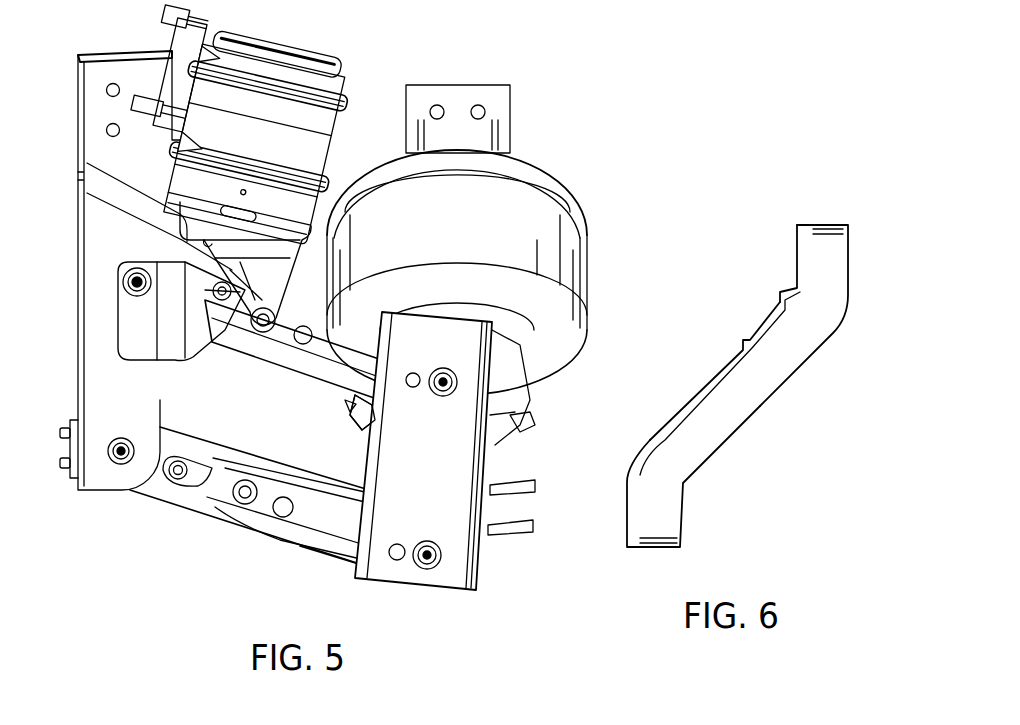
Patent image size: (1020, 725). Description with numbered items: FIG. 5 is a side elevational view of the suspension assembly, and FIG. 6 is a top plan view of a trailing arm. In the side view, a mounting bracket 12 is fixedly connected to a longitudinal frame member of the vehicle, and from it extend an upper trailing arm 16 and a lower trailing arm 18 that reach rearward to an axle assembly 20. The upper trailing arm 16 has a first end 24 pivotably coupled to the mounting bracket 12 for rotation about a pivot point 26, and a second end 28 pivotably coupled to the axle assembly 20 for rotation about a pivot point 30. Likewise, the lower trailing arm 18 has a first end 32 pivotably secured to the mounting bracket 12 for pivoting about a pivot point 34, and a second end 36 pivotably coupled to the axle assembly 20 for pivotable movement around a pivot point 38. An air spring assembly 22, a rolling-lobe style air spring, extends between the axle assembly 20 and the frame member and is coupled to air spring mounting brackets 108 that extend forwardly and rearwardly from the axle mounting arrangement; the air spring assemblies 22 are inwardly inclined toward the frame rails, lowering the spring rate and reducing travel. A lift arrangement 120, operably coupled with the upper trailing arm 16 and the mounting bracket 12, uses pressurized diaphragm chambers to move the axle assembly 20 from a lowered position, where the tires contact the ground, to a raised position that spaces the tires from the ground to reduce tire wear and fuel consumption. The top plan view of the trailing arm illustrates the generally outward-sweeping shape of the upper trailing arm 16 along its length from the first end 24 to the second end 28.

In FIG. 5, the mounting bracket 12 is at (126, 52).
In FIG. 5, the upper trailing arm 16 is at (293, 367).
In FIG. 6, the upper trailing arm 16 is at (753, 386).
In FIG. 5, the lower trailing arm 18 is at (230, 515).
In FIG. 5, the axle assembly 20 is at (491, 468).
In FIG. 5, the air spring assembly 22 is at (596, 248).
In FIG. 5, the first end 24 is at (226, 347).
In FIG. 6, the first end 24 is at (834, 328).
In FIG. 5, the pivot point 26 is at (122, 285).
In FIG. 5, the second end 28 is at (356, 402).
In FIG. 6, the second end 28 is at (690, 470).
In FIG. 5, the pivot point 30 is at (452, 380).
In FIG. 5, the first end 32 is at (145, 498).
In FIG. 5, the pivot point 34 is at (108, 460).
In FIG. 5, the second end 36 is at (330, 565).
In FIG. 5, the pivot point 38 is at (418, 568).
In FIG. 5, the air spring mounting bracket 108 is at (520, 432).
In FIG. 5, the lift arrangement 120 is at (350, 62).